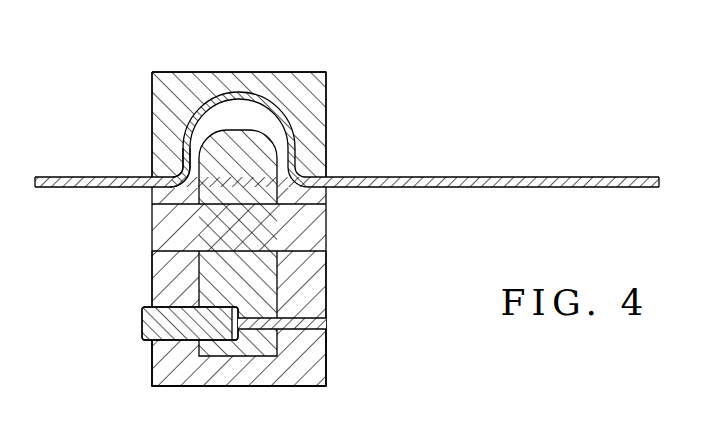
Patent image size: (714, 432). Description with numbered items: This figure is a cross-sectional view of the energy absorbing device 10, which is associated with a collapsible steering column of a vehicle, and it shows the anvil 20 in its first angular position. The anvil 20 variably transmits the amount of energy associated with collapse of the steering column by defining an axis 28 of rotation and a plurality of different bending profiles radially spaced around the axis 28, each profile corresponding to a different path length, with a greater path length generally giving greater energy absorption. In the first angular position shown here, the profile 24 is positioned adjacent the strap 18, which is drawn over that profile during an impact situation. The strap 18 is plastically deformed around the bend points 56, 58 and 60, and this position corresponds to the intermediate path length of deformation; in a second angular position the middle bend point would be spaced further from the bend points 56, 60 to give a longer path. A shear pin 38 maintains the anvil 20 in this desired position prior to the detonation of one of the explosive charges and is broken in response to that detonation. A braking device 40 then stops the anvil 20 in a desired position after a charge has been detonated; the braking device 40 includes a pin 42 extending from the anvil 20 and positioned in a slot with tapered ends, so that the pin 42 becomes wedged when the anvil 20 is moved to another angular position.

The energy absorbing device 10 is at (126, 58).
The strap 18 is at (492, 177).
The anvil 20 is at (210, 273).
The bending profile 24 is at (245, 130).
The axis of rotation 28 is at (318, 225).
The shear pin 38 is at (318, 324).
The braking device 40 is at (141, 355).
The pin 42 is at (142, 326).
The bend point 56 is at (293, 168).
The bend point 58 is at (218, 117).
The bend point 60 is at (181, 168).